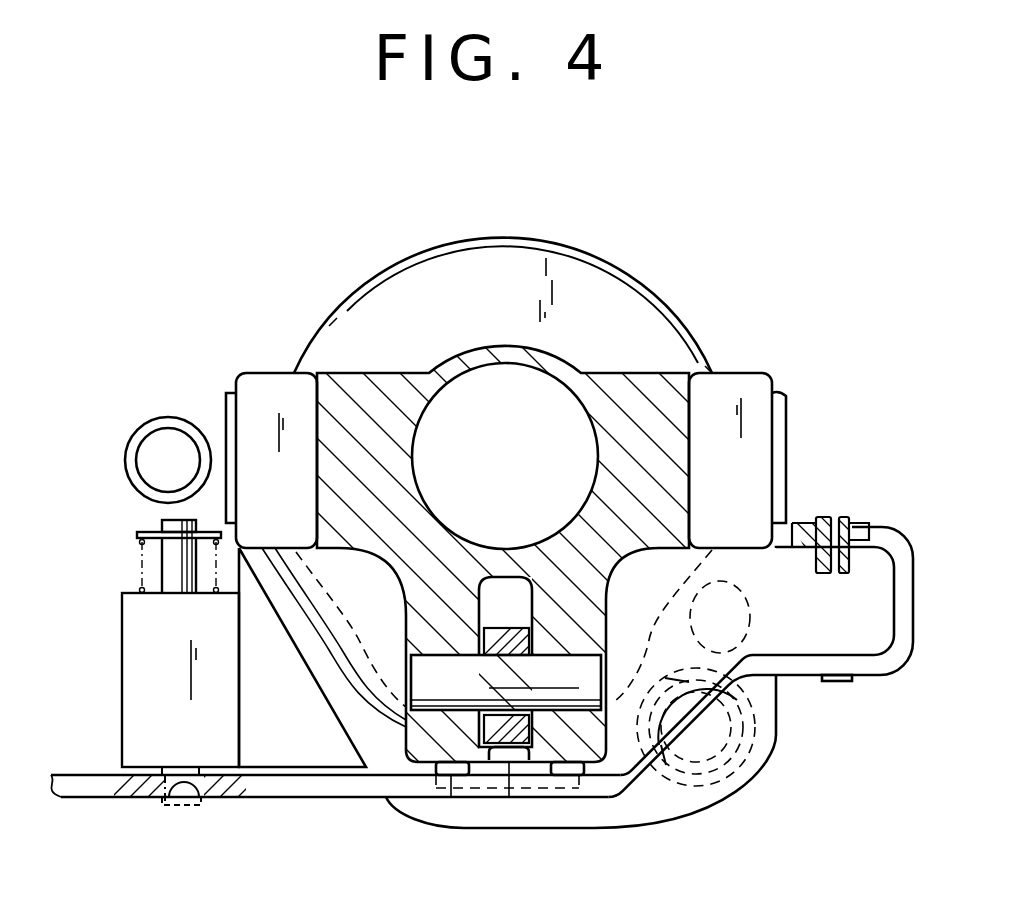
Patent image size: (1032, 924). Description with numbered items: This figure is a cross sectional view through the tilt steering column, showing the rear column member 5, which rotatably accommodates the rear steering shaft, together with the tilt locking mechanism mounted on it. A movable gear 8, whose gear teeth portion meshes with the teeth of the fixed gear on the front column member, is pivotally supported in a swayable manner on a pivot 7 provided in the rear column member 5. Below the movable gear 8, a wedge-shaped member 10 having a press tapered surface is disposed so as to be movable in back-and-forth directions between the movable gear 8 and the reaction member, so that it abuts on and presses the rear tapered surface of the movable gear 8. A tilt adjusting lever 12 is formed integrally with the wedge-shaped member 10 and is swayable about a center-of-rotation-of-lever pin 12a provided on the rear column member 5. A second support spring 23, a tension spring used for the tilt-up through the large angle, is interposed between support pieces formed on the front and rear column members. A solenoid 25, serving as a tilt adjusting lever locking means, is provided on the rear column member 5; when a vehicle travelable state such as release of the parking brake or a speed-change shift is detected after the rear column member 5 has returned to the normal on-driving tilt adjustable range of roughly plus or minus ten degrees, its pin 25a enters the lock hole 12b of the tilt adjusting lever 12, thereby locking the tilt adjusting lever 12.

The rear column member 5 is at (693, 413).
The pivot 7 is at (427, 670).
The movable gear 8 is at (495, 745).
The wedge-shaped member 10 is at (560, 783).
The tilt adjusting lever 12 is at (338, 798).
The center-of-rotation-of-lever pin 12a is at (845, 517).
The lock hole 12b is at (185, 797).
The second support spring 23 is at (128, 443).
The solenoid 25 is at (123, 686).
The pin 25a is at (220, 768).